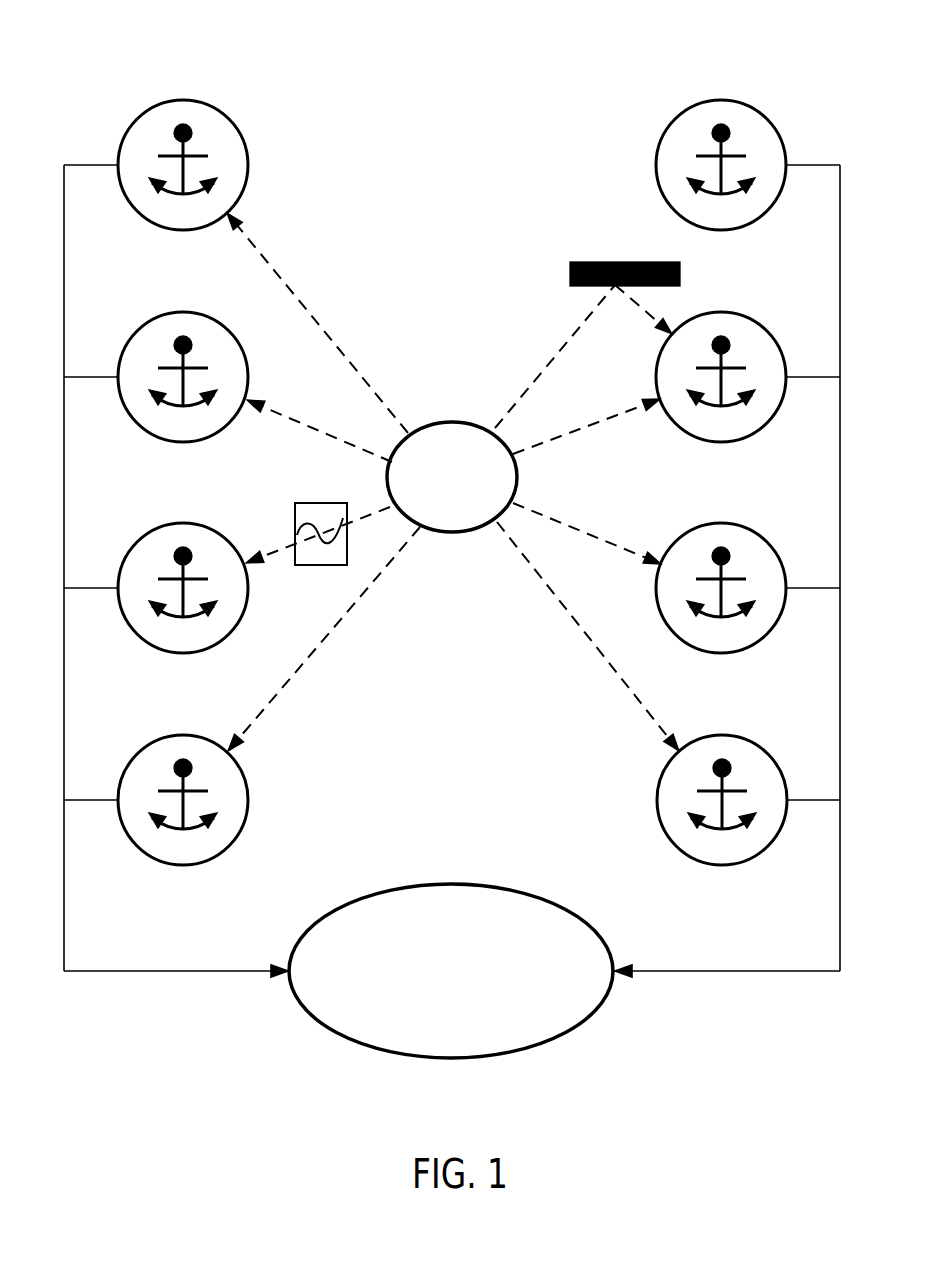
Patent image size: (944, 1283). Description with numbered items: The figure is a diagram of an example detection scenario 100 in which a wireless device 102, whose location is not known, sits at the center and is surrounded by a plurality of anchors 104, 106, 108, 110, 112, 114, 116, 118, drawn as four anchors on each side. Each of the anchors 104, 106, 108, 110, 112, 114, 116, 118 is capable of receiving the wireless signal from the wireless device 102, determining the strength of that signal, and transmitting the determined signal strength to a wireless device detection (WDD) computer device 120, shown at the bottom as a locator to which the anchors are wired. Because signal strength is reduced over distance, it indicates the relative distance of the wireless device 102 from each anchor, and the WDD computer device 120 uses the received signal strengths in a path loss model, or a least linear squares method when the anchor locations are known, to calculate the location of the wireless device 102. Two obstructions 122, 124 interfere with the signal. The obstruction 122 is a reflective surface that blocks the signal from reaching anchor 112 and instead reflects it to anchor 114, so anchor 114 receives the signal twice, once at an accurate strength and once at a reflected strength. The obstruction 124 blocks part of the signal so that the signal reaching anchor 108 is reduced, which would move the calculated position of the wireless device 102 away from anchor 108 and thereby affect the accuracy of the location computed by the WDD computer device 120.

The detection scenario 100 is at (418, 68).
The wireless device 102 is at (451, 421).
The anchor 104 is at (249, 262).
The anchor 106 is at (241, 382).
The anchor 108 is at (240, 580).
The anchor 110 is at (255, 696).
The anchor 112 is at (734, 159).
The anchor 114 is at (663, 369).
The anchor 116 is at (663, 578).
The anchor 118 is at (655, 693).
The wireless device detection (WDD) computer device 120 is at (452, 958).
The obstruction 122 is at (595, 262).
The obstruction 124 is at (320, 503).